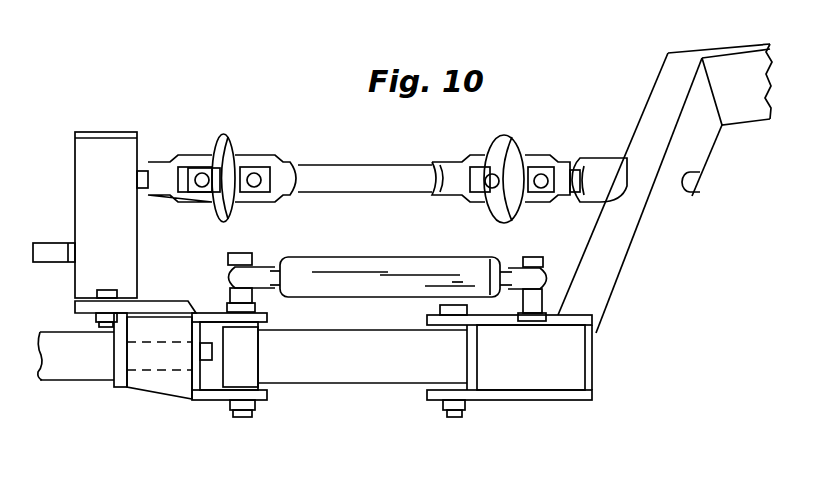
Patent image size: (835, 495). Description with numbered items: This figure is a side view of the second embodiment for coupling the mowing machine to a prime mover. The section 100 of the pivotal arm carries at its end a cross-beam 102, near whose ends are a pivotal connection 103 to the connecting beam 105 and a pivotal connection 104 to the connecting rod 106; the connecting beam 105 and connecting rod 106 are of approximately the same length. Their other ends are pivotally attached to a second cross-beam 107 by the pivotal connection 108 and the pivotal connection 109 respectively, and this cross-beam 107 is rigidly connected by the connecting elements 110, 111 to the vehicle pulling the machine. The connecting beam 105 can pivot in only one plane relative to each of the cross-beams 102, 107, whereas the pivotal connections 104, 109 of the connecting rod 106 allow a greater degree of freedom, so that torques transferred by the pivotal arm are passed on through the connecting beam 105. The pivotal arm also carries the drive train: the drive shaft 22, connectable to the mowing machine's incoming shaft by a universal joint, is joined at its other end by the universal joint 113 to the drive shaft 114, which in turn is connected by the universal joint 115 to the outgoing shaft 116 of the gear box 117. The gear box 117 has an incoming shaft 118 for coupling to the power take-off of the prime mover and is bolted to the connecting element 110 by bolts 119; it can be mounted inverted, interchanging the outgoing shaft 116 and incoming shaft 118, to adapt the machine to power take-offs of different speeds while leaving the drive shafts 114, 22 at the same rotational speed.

The section of pivotal arm 100 is at (724, 60).
The drive shaft 22 is at (600, 166).
The universal joint 113 is at (516, 143).
The drive shaft 114 is at (383, 172).
The universal joint 115 is at (227, 143).
The outgoing shaft 116 is at (143, 180).
The gear box 117 is at (90, 170).
The incoming shaft 118 is at (50, 247).
The bolts 119 is at (112, 288).
The pivotal connection 109 is at (232, 257).
The connecting rod 106 is at (393, 268).
The pivotal connection 104 is at (515, 266).
The connecting element 111 is at (78, 372).
The connecting element 110 is at (170, 330).
The cross-beam 107 is at (217, 397).
The pivotal connection 108 is at (242, 370).
The connecting beam 105 is at (345, 375).
The pivotal connection 103 is at (453, 422).
The cross-beam 102 is at (582, 399).